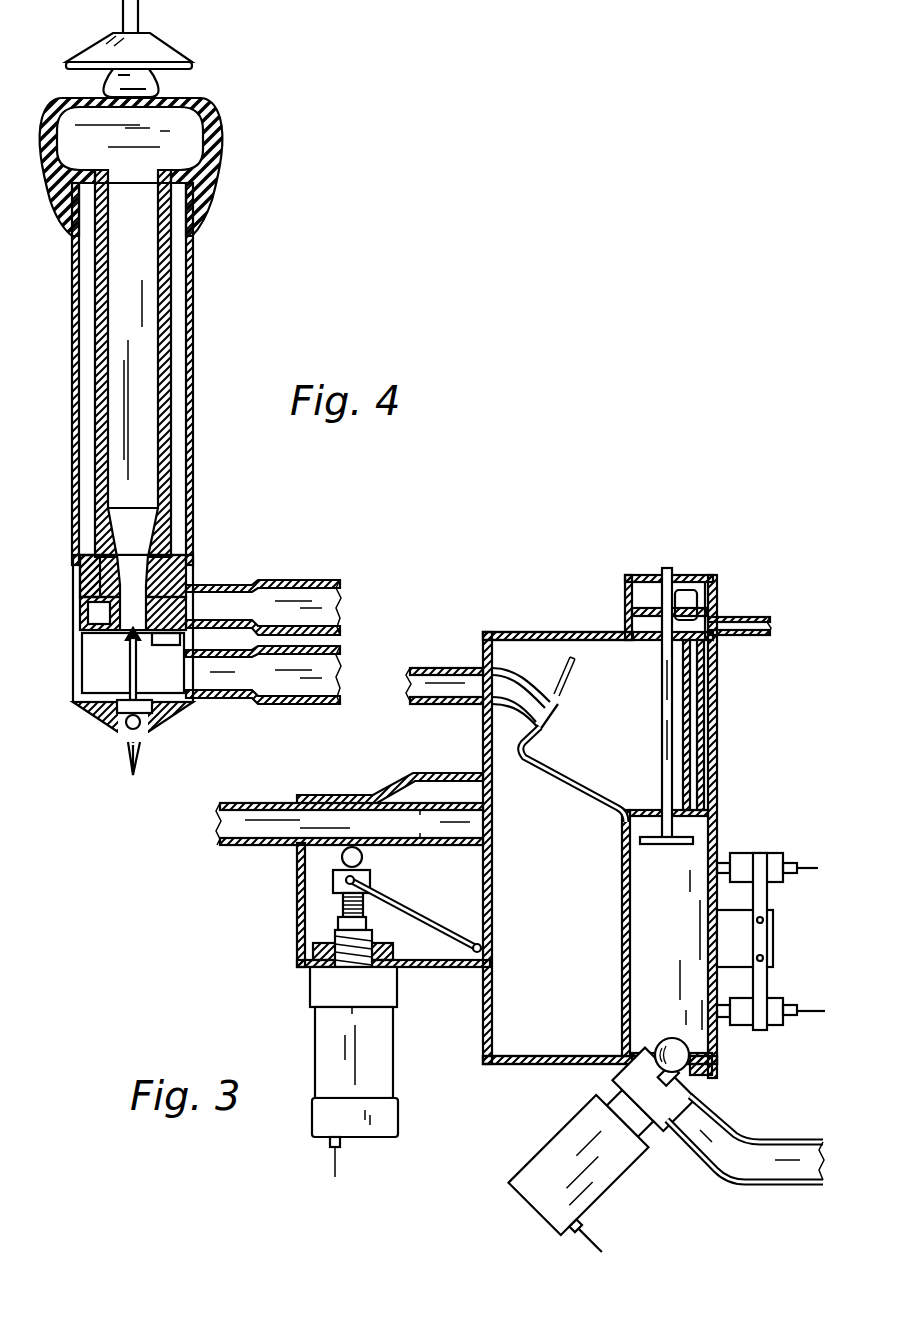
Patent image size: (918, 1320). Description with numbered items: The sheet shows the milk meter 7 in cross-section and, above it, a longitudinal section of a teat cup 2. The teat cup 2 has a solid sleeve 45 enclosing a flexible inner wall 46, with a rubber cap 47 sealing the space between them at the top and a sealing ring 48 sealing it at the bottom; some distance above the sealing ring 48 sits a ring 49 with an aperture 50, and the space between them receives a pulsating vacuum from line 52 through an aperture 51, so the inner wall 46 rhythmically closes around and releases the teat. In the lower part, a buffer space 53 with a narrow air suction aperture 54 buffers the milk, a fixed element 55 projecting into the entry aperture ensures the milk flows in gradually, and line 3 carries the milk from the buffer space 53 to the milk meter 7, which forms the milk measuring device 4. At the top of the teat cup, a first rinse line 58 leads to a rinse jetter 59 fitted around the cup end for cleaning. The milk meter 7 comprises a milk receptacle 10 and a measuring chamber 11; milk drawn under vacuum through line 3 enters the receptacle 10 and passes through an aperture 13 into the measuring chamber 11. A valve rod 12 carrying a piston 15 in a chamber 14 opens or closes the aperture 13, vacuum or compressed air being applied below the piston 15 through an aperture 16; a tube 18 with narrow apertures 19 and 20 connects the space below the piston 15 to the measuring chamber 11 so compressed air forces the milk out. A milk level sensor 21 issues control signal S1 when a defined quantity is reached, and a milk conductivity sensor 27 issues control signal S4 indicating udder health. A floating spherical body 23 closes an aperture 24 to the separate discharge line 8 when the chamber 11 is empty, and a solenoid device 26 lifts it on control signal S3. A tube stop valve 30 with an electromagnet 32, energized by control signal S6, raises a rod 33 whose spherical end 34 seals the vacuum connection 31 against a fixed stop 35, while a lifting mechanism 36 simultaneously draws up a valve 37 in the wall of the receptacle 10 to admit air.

In FIG. 4, the teat cup 2 is at (200, 320).
In FIG. 4, the first rinse line 58 is at (123, 20).
In FIG. 4, the rinse jetter 59 is at (170, 50).
In FIG. 4, the rubber cap 47 is at (213, 155).
In FIG. 4, the inner wall 46 is at (165, 442).
In FIG. 4, the sleeve 45 is at (190, 467).
In FIG. 4, the buffer space 53 is at (92, 706).
In FIG. 4, the ring 49 is at (180, 568).
In FIG. 4, the aperture 50 is at (78, 566).
In FIG. 4, the sealing ring 48 is at (86, 608).
In FIG. 4, the aperture 51 is at (212, 588).
In FIG. 4, the air suction aperture 54 is at (106, 657).
In FIG. 4, the fixed element 55 is at (144, 701).
In FIG. 4, the line 52 is at (325, 603).
In FIG. 4, the separate line 3 is at (325, 669).
In FIG. 3, the separate line 3 is at (465, 690).
In FIG. 3, the milk measuring device 4 is at (535, 626).
In FIG. 3, the milk meter 7 is at (528, 1068).
In FIG. 3, the milk receptacle 10 is at (487, 1028).
In FIG. 3, the measuring chamber 11 is at (640, 950).
In FIG. 3, the valve rod 12 is at (662, 672).
In FIG. 3, the aperture 13 is at (660, 800).
In FIG. 3, the chamber 14 is at (640, 575).
In FIG. 3, the piston 15 is at (640, 592).
In FIG. 3, the aperture 16 is at (735, 617).
In FIG. 3, the tube 18 is at (700, 755).
In FIG. 3, the aperture 19 is at (692, 598).
In FIG. 3, the aperture 20 is at (693, 826).
In FIG. 3, the milk level sensor 21 is at (785, 853).
In FIG. 3, the spherical body 23 is at (675, 1039).
In FIG. 3, the aperture 24 is at (690, 1083).
In FIG. 3, the solenoid device 26 is at (545, 1156).
In FIG. 3, the milk conductivity sensor 27 is at (786, 1000).
In FIG. 3, the separate discharge line 8 is at (800, 1140).
In FIG. 3, the tube stop valve 30 is at (310, 921).
In FIG. 3, the vacuum connection 31 is at (260, 846).
In FIG. 3, the electromagnet 32 is at (378, 1075).
In FIG. 3, the rod 33 is at (335, 903).
In FIG. 3, the spherical end 34 is at (362, 857).
In FIG. 3, the fixed stop 35 is at (373, 795).
In FIG. 3, the lifting mechanism 36 is at (430, 918).
In FIG. 3, the valve 37 is at (495, 917).
In FIG. 3, the control signal S1 is at (852, 873).
In FIG. 3, the control signal S3 is at (616, 1259).
In FIG. 3, the control signal S4 is at (843, 1013).
In FIG. 3, the control signal S6 is at (341, 1196).